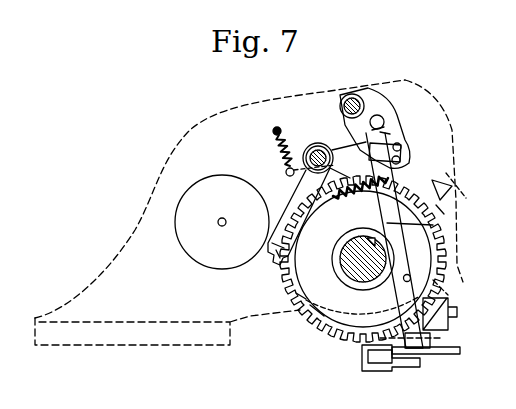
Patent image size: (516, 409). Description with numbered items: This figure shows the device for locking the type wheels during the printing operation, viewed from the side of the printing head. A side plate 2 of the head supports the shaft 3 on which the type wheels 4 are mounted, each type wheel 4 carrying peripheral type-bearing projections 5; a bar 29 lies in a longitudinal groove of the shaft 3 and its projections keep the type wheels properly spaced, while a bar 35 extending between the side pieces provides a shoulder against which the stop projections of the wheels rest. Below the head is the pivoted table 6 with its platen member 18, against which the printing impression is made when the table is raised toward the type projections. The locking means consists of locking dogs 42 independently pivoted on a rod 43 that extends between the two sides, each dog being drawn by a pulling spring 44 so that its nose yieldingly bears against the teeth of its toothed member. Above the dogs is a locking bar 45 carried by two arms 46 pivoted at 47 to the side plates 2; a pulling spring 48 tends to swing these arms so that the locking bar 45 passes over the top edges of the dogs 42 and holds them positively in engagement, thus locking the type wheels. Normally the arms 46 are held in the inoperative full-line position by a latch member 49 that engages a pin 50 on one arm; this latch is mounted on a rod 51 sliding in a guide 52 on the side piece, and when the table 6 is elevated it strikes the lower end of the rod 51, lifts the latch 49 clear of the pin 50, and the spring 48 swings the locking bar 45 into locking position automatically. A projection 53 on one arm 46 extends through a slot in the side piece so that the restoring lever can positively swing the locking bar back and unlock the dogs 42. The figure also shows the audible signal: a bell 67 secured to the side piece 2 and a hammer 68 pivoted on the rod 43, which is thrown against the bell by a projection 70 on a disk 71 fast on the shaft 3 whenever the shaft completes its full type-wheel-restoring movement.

The side plate 2 is at (406, 86).
The shaft 3 is at (352, 278).
The type wheel 4 is at (445, 252).
The type-bearing projection 5 is at (433, 190).
The table 6 is at (446, 355).
The platen member 18 is at (380, 363).
The bar 29 is at (372, 240).
The bar 35 is at (438, 325).
The locking dog 42 is at (338, 150).
The rod 43 is at (312, 151).
The pulling spring 44 is at (273, 138).
The locking bar 45 is at (386, 131).
The arm 46 is at (382, 124).
The pivot 47 is at (352, 94).
The pulling spring 48 is at (355, 195).
The latch member 49 is at (401, 161).
The pin 50 is at (402, 148).
The rod 51 is at (444, 214).
The guide 52 is at (411, 279).
The projection 53 is at (379, 115).
The bell 67 is at (187, 239).
The hammer 68 is at (292, 201).
The projection 70 is at (302, 280).
The disk 71 is at (326, 302).